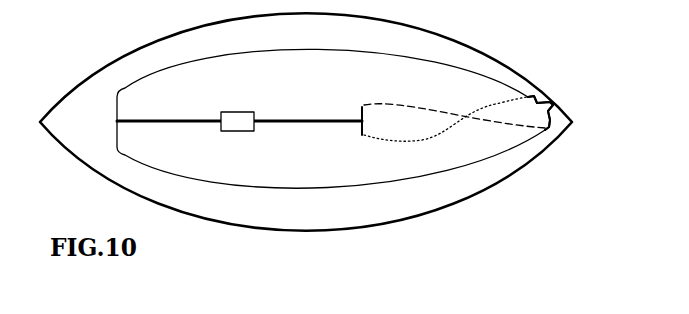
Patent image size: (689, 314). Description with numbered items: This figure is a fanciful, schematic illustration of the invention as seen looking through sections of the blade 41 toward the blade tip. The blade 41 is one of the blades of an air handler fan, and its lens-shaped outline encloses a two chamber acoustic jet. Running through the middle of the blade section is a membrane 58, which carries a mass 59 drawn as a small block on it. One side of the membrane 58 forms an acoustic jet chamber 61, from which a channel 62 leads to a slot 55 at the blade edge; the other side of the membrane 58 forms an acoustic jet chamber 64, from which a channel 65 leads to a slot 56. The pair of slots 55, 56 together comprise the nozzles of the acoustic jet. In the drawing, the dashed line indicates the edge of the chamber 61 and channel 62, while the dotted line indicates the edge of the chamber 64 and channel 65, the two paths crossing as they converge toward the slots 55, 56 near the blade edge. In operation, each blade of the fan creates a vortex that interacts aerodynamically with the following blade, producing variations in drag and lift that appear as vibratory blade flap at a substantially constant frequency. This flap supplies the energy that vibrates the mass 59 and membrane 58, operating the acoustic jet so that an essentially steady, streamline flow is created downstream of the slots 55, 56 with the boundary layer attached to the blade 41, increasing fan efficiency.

The blade 41 is at (167, 34).
The slot 55 is at (552, 100).
The slot 56 is at (540, 113).
The membrane 58 is at (290, 123).
The mass 59 is at (243, 113).
The acoustic jet chamber 61 is at (245, 90).
The channel 62 is at (413, 94).
The acoustic jet chamber 64 is at (241, 170).
The channel 65 is at (409, 174).